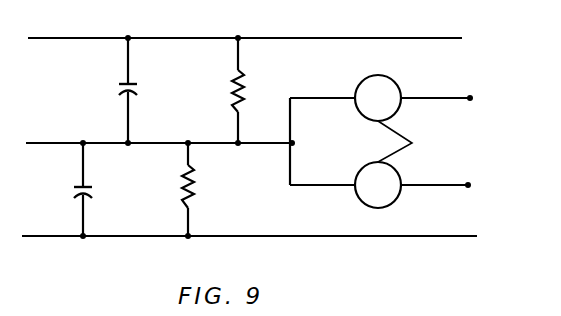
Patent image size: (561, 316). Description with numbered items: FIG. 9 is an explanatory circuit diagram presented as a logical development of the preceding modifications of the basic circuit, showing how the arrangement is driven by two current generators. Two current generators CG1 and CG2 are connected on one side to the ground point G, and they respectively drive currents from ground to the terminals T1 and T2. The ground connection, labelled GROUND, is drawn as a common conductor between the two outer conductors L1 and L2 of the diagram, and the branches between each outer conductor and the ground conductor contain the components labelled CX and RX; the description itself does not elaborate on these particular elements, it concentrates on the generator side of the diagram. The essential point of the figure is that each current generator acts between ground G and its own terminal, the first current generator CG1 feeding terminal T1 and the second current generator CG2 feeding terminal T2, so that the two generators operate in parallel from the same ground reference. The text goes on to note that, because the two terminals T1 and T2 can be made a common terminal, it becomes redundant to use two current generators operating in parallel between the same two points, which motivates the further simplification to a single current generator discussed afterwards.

The line conductor L1 is at (263, 38).
The line conductor L2 is at (222, 236).
The ground GROUND is at (150, 142).
The capacitor CX is at (119, 84).
The resistor RX is at (230, 87).
The ground G is at (294, 143).
The current generator CG1 is at (345, 98).
The current generator CG2 is at (345, 185).
The terminal T1 is at (470, 98).
The terminal T2 is at (468, 185).